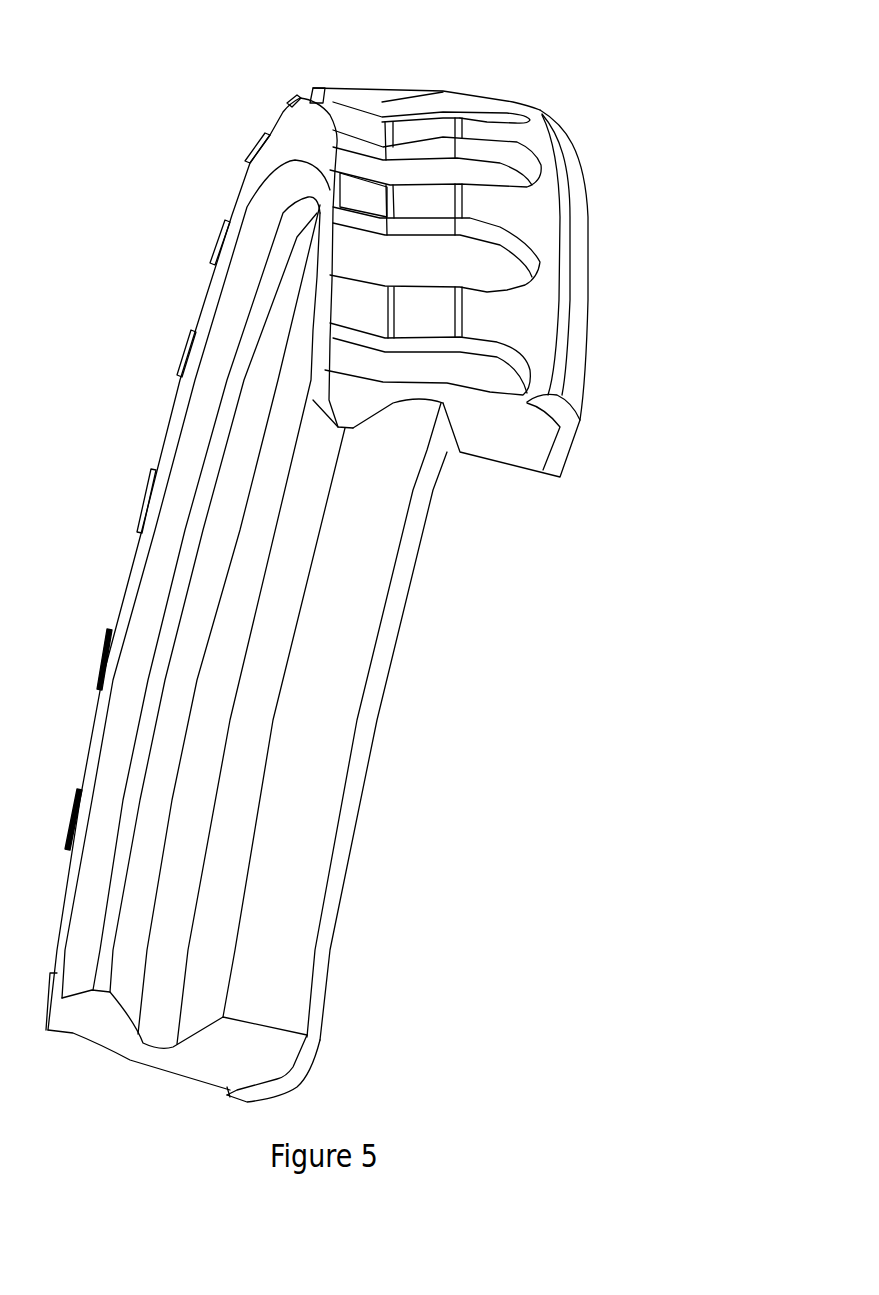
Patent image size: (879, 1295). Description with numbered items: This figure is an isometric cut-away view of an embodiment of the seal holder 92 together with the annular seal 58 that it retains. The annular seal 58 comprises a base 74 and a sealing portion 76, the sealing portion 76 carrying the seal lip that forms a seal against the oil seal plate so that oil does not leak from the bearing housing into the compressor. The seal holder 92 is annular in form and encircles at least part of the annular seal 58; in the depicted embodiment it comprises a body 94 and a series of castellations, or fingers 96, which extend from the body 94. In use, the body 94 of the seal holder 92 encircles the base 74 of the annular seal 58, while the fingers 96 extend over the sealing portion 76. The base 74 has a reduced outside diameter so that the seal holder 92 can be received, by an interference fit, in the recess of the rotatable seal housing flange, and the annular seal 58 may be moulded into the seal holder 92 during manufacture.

The annular seal 58 is at (313, 743).
The base 74 is at (508, 433).
The sealing portion 76 is at (360, 360).
The seal holder 92 is at (540, 112).
The body 94 is at (589, 303).
The fingers 96 is at (360, 197).